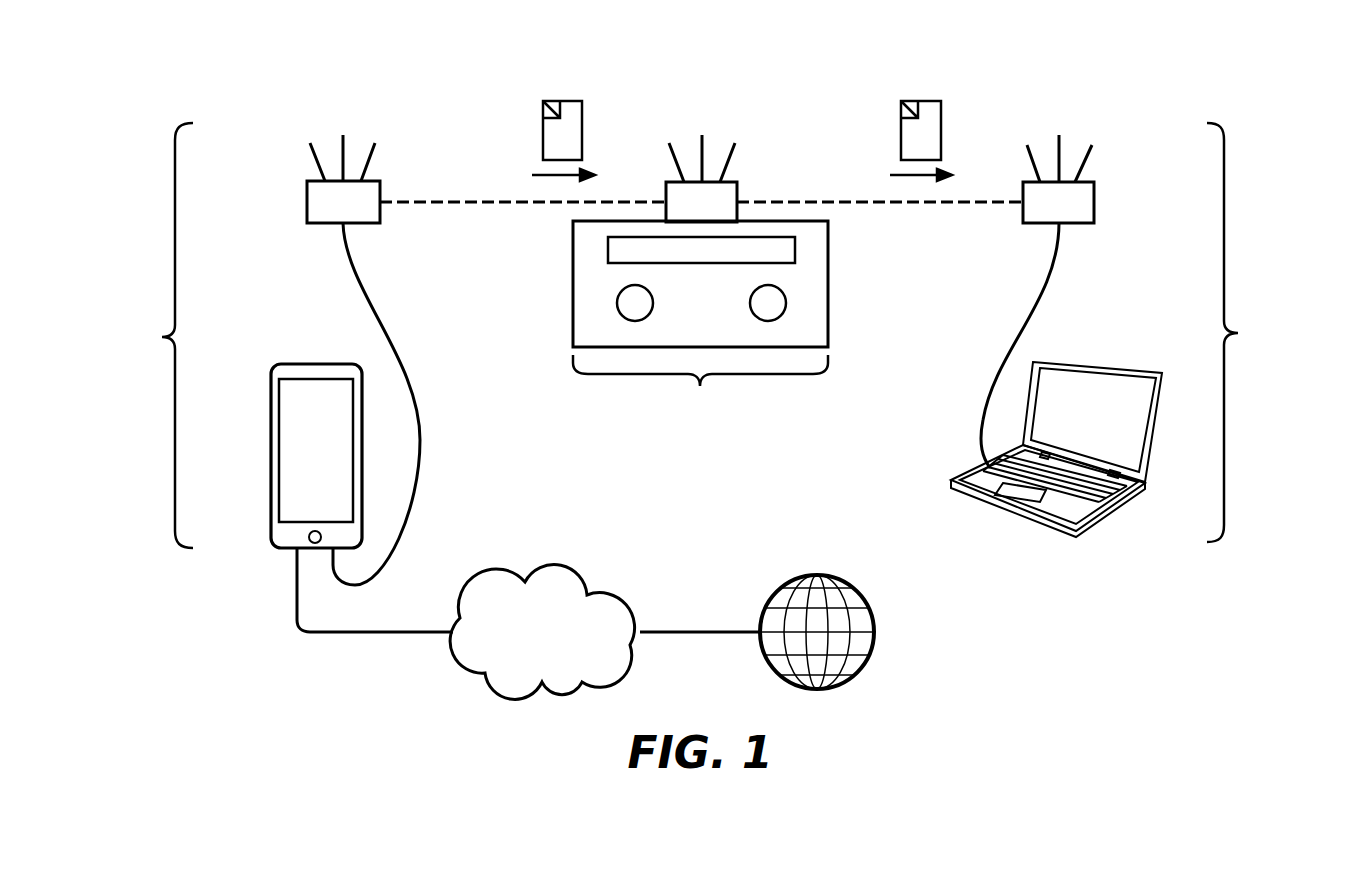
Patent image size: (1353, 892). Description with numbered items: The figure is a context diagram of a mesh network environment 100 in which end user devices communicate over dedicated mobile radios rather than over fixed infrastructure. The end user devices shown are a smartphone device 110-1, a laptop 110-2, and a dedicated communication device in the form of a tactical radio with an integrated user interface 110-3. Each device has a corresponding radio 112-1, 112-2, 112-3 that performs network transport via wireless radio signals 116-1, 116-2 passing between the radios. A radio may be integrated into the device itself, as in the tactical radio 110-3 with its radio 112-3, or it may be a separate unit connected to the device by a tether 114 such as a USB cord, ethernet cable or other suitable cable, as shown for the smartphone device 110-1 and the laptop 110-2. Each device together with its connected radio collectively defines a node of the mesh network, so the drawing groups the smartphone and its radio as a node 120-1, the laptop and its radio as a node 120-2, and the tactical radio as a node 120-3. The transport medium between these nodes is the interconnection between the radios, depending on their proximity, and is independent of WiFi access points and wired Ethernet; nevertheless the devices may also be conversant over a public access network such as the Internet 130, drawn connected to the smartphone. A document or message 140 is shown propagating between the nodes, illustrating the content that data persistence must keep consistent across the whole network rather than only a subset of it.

The mesh network environment 100 is at (940, 543).
The smartphone device 110-1 is at (317, 364).
The laptop 110-2 is at (1118, 360).
The tactical radio with integrated user interface 110-3 is at (828, 318).
The radio 112-1 is at (307, 200).
The radio 112-2 is at (1094, 200).
The radio 112-3 is at (666, 195).
The tether 114 is at (421, 452).
The wireless radio signal 116-1 is at (492, 206).
The wireless radio signal 116-2 is at (908, 206).
The node 120-1 is at (145, 335).
The node 120-2 is at (1257, 332).
The node 120-3 is at (700, 386).
The Internet 130 is at (555, 567).
The document or message 140 is at (543, 128).